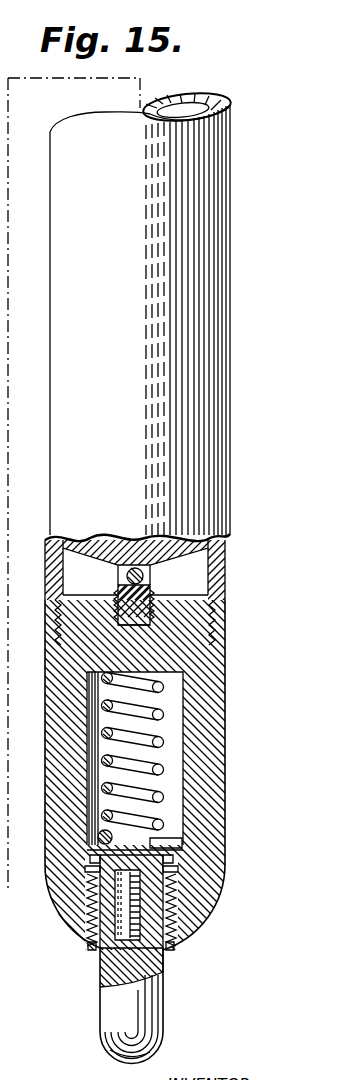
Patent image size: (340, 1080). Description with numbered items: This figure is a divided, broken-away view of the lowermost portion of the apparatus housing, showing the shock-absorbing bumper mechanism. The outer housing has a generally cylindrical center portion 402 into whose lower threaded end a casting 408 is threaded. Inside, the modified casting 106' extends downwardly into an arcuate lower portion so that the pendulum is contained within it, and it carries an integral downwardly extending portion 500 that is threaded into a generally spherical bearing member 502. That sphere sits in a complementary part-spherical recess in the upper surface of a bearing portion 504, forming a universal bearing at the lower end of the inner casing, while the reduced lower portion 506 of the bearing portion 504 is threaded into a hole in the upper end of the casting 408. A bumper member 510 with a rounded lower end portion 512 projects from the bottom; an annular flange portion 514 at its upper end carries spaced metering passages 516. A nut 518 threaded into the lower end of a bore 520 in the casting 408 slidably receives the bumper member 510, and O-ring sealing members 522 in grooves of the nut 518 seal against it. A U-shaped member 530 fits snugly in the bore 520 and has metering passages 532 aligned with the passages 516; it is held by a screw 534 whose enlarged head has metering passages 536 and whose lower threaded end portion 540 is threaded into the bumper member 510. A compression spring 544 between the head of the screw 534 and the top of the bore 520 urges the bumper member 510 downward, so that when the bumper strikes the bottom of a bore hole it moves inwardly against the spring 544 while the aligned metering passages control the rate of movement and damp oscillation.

The modified casting 106' is at (163, 326).
The cylindrical center portion 402 is at (223, 598).
The casting 408 is at (215, 737).
The downwardly extending portion 500 is at (127, 577).
The spherical bearing member 502 is at (144, 577).
The bearing portion 504 is at (118, 594).
The lower portion of bearing portion 506 is at (140, 626).
The bumper member 510 is at (152, 995).
The rounded lower end portion 512 is at (148, 1063).
The annular flange portion 514 is at (180, 880).
The metering passages 516 is at (180, 905).
The nut 518 is at (97, 952).
The bore 520 is at (176, 788).
The O-ring sealing members 522 is at (178, 945).
The U-shaped member 530 is at (185, 842).
The metering passages 532 is at (172, 868).
The screw 534 is at (95, 846).
The metering passages 536 is at (175, 858).
The lower threaded end portion 540 is at (100, 982).
The compression spring 544 is at (160, 712).